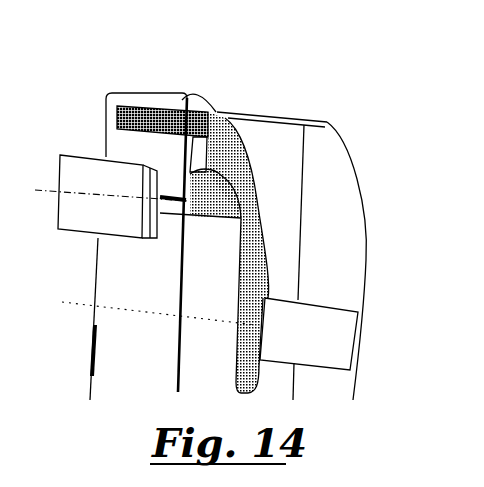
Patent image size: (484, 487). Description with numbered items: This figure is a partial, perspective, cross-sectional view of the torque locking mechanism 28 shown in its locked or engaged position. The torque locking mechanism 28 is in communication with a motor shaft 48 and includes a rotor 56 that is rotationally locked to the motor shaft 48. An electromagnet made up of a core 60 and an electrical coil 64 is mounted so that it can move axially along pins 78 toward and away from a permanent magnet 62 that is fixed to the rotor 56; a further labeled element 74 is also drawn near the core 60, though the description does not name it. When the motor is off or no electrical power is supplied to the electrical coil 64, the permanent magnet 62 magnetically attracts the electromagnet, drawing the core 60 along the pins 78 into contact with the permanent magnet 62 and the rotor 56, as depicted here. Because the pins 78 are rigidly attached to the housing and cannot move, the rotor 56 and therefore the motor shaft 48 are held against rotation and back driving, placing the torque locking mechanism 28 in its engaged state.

The torque locking mechanism 28 is at (253, 52).
The motor shaft 48 is at (309, 334).
The rotor 56 is at (320, 178).
The core 60 is at (162, 100).
The permanent magnet 62 is at (222, 237).
The electrical coil 64 is at (133, 112).
The pivot tab 74 is at (173, 194).
The pins 78 is at (107, 277).